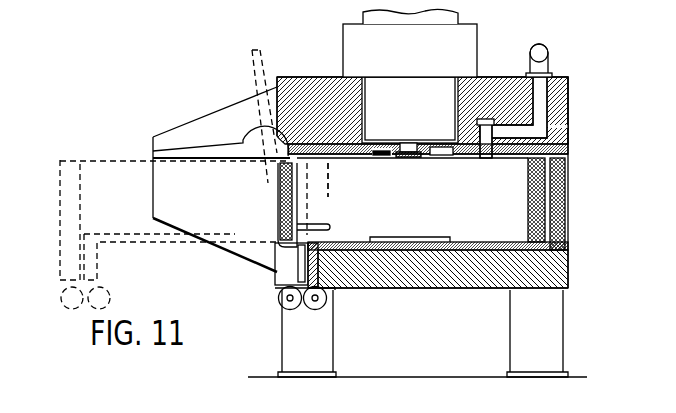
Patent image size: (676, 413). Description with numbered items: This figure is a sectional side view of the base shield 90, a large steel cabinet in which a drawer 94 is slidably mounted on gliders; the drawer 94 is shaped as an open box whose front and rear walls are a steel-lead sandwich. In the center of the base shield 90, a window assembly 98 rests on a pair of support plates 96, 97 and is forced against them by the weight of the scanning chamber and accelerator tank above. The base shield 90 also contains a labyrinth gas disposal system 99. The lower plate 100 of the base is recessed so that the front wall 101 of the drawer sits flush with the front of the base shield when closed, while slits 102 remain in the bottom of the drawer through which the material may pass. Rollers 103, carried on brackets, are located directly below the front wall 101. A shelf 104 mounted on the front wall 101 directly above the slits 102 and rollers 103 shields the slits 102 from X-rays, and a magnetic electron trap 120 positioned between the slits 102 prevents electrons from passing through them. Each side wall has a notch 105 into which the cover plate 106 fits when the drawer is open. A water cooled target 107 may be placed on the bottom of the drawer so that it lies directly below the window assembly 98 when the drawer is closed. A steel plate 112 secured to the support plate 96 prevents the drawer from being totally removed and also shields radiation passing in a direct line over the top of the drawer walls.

The base shield 90 is at (297, 77).
The drawer 94 is at (60, 170).
The support plate 96 is at (362, 156).
The support plate 97 is at (470, 157).
The window assembly 98 is at (406, 157).
The labyrinth gas disposal system 99 is at (546, 94).
The lower plate 100 is at (462, 285).
The front wall 101 is at (282, 272).
The slits 102 is at (273, 237).
The rollers 103 is at (315, 310).
The shelf 104 is at (320, 226).
The notch 105 is at (497, 163).
The cover plate 106 is at (172, 151).
The water cooled target 107 is at (420, 236).
The steel plate 112 is at (282, 177).
The magnetic electron trap 120 is at (300, 263).